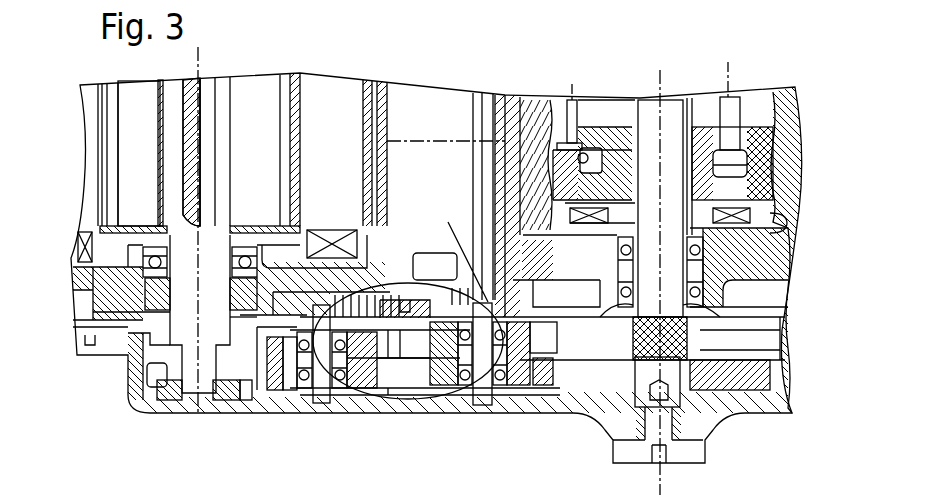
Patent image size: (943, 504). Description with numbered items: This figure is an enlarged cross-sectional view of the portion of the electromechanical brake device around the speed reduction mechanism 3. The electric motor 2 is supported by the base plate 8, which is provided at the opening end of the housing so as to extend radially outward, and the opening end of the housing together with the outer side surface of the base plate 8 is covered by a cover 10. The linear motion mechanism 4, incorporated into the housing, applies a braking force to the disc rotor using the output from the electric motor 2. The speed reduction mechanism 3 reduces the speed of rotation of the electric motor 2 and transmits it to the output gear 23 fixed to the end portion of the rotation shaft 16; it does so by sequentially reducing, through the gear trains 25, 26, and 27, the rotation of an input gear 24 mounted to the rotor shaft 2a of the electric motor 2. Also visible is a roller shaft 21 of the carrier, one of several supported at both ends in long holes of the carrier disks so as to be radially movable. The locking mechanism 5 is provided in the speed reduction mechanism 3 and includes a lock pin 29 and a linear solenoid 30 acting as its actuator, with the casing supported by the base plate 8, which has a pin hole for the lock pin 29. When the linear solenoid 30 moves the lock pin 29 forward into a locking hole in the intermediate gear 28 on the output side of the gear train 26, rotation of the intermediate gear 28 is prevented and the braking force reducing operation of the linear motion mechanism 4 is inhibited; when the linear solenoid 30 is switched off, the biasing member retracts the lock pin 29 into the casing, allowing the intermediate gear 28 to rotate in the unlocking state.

The electric motor 2 is at (253, 143).
The rotor shaft 2a is at (215, 92).
The speed reduction mechanism 3 is at (436, 268).
The linear motion mechanism 4 is at (767, 331).
The locking mechanism 5 is at (414, 372).
The base plate 8 is at (107, 302).
The cover 10 is at (675, 418).
The rotation shaft 16 is at (652, 110).
The roller shaft 21 is at (737, 98).
The output gear 23 is at (738, 377).
The input gear 24 is at (167, 387).
The gear train 25 is at (244, 404).
The gear train 26 is at (392, 372).
The gear train 27 is at (553, 404).
The intermediate gear 28 is at (302, 397).
The lock pin 29 is at (418, 365).
The linear solenoid 30 is at (500, 388).